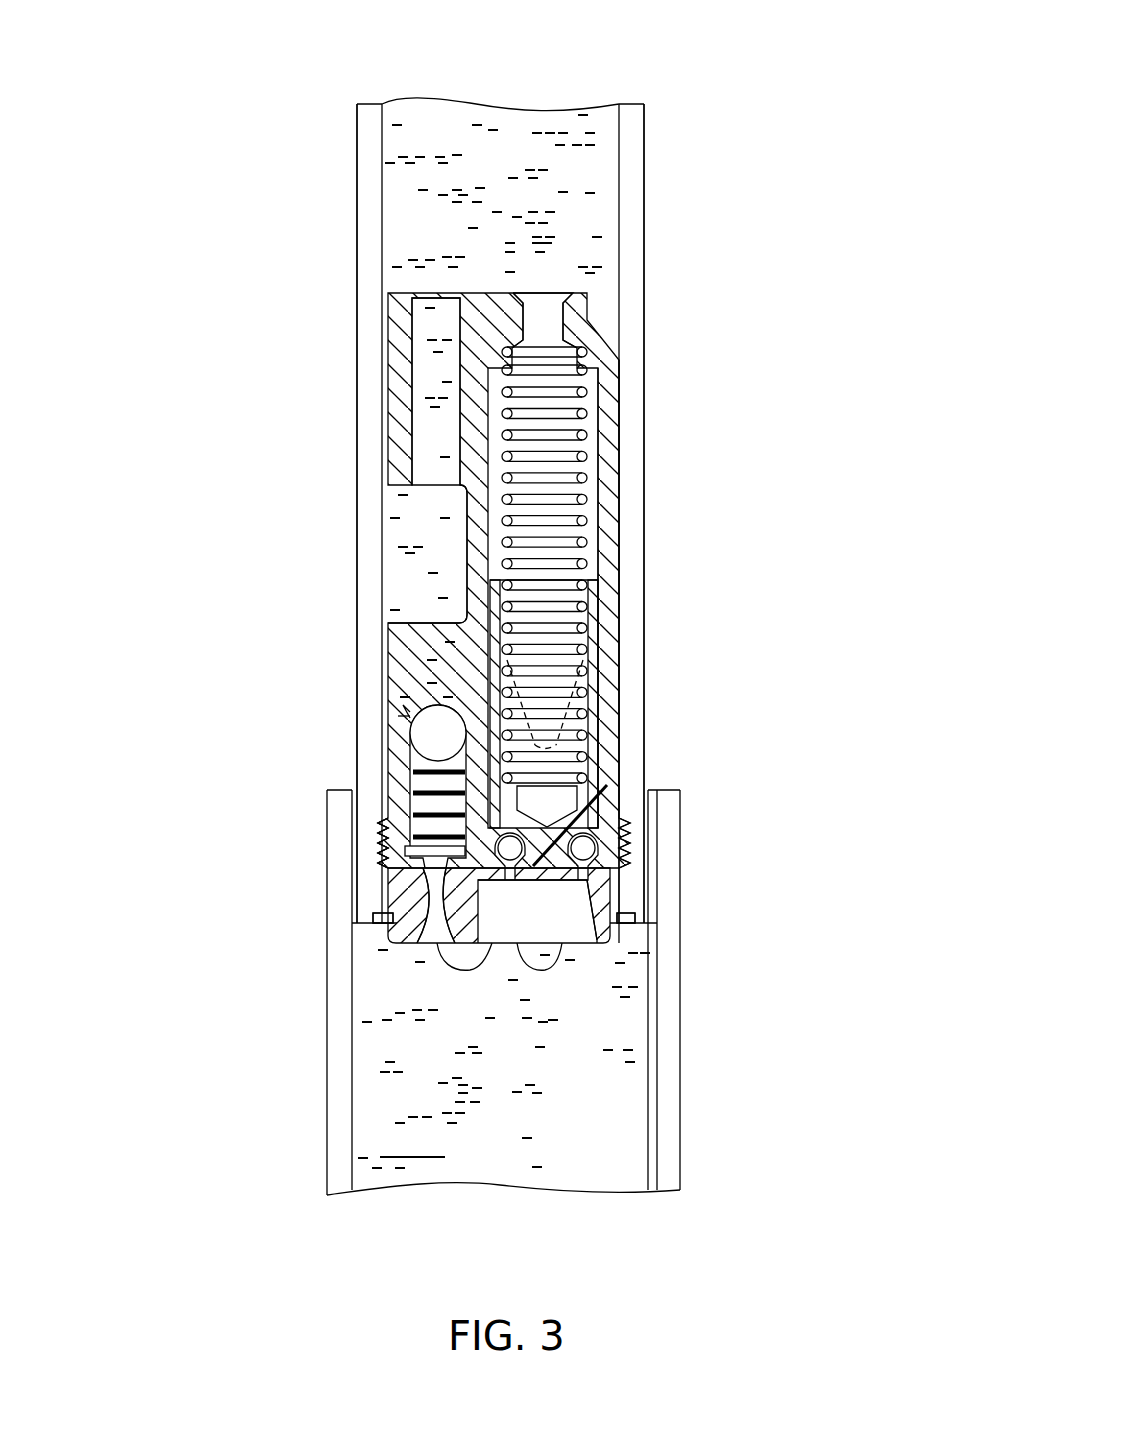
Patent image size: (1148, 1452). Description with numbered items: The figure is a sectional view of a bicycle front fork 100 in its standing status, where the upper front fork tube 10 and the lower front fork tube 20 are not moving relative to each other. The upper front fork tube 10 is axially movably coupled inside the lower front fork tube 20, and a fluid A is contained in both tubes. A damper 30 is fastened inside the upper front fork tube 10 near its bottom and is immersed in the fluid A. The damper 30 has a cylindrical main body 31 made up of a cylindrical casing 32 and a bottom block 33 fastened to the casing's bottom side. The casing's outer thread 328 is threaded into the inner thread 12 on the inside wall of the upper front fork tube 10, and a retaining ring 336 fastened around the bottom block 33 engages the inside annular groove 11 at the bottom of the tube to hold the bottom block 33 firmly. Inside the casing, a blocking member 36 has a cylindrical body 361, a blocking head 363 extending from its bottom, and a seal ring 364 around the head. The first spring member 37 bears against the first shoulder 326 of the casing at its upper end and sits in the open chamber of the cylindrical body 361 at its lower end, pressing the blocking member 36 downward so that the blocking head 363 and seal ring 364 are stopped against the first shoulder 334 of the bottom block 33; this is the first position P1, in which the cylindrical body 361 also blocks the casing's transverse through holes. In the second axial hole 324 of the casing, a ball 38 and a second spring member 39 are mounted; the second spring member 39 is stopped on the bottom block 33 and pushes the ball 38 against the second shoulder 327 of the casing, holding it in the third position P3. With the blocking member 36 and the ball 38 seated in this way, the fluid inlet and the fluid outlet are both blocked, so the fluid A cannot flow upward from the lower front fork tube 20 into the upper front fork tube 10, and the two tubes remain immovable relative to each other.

The front fork 100 is at (318, 100).
The fluid A is at (550, 130).
The upper front fork tube 10 is at (348, 303).
The lower front fork tube 20 is at (318, 1177).
The damper 30 is at (380, 388).
The first shoulder 326 is at (570, 340).
The first spring member 37 is at (585, 425).
The cylindrical body 361 is at (603, 604).
The blocking member 36 is at (605, 690).
The first position P1 is at (608, 751).
The second axial hole 324 is at (435, 640).
The second shoulder 327 is at (405, 703).
The third position P3 is at (385, 712).
The ball 38 is at (432, 738).
The second spring member 39 is at (420, 790).
The inner thread 12 is at (382, 843).
The outer thread 328 is at (279, 852).
The cylindrical casing 32 is at (609, 800).
The cylindrical main body 31 is at (800, 757).
The bottom block 33 is at (627, 905).
The first shoulder 334 is at (585, 940).
The seal ring 364 is at (467, 943).
The blocking head 363 is at (530, 880).
The inside annular groove 11 is at (626, 921).
The retaining ring 336 is at (594, 951).